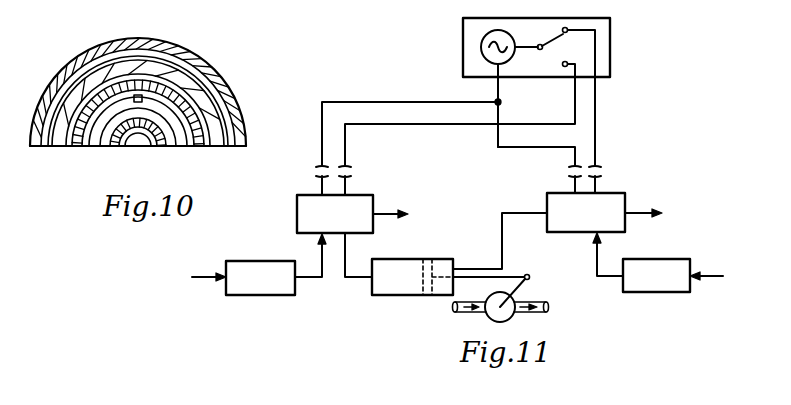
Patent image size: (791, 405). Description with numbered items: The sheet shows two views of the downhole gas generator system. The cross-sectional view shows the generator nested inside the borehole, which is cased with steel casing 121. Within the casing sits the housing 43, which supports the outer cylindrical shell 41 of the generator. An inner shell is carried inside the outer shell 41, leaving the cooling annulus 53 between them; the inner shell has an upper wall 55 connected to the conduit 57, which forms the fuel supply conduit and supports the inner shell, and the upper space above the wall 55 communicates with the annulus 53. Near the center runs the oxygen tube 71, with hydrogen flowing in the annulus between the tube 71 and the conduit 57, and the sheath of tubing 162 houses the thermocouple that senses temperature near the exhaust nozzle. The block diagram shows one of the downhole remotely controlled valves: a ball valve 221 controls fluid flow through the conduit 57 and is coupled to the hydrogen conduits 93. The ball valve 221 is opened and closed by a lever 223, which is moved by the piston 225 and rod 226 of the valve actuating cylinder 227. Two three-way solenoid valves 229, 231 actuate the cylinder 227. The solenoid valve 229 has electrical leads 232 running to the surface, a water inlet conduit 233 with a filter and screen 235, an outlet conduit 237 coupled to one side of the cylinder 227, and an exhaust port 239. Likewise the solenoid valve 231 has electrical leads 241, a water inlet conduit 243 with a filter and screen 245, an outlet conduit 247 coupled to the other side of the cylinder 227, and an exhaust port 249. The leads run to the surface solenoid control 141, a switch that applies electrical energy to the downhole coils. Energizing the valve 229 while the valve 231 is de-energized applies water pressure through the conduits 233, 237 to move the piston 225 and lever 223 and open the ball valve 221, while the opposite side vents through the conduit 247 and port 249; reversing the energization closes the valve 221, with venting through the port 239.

In FIG. 10, the steel casing 121 is at (228, 86).
In FIG. 10, the housing 43 is at (200, 88).
In FIG. 10, the cooling annulus 53 is at (125, 100).
In FIG. 10, the outer cylindrical shell 41 is at (165, 80).
In FIG. 10, the upper wall 55 is at (115, 118).
In FIG. 10, the sheath of tubing 162 is at (138, 95).
In FIG. 10, the conduit 57 is at (172, 147).
In FIG. 11, the conduit 57 is at (540, 313).
In FIG. 10, the oxygen tube 71 is at (153, 148).
In FIG. 11, the solenoid control 141 is at (612, 47).
In FIG. 11, the three-way solenoid valve 231 is at (557, 193).
In FIG. 11, the electrical leads 232 is at (351, 176).
In FIG. 11, the electrical leads 241 is at (600, 176).
In FIG. 11, the three-way solenoid valve 229 is at (294, 203).
In FIG. 11, the exhaust port 239 is at (395, 207).
In FIG. 11, the water inlet conduit 233 is at (202, 276).
In FIG. 11, the filter and screen 235 is at (266, 296).
In FIG. 11, the outlet conduit 237 is at (358, 278).
In FIG. 11, the valve actuating cylinder 227 is at (400, 296).
In FIG. 11, the piston 225 is at (432, 262).
In FIG. 11, the outlet conduit 247 is at (522, 213).
In FIG. 11, the rod 226 is at (513, 275).
In FIG. 11, the lever 223 is at (523, 288).
In FIG. 11, the ball valve 221 is at (517, 315).
In FIG. 11, the hydrogen conduits 93 is at (475, 310).
In FIG. 11, the exhaust port 249 is at (640, 212).
In FIG. 11, the filter and screen 245 is at (655, 259).
In FIG. 11, the water inlet conduit 243 is at (713, 278).